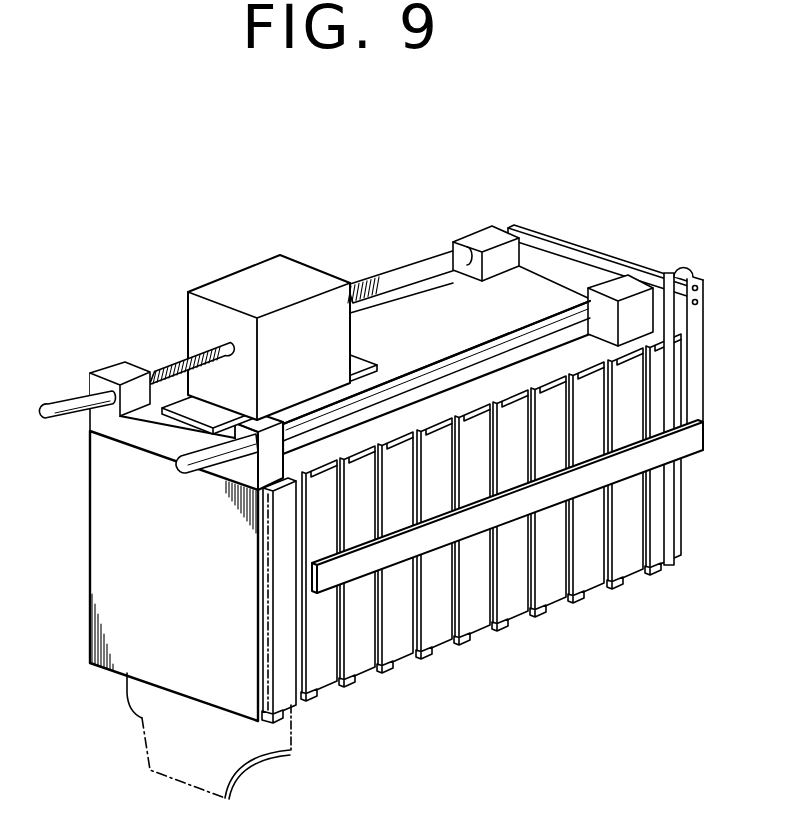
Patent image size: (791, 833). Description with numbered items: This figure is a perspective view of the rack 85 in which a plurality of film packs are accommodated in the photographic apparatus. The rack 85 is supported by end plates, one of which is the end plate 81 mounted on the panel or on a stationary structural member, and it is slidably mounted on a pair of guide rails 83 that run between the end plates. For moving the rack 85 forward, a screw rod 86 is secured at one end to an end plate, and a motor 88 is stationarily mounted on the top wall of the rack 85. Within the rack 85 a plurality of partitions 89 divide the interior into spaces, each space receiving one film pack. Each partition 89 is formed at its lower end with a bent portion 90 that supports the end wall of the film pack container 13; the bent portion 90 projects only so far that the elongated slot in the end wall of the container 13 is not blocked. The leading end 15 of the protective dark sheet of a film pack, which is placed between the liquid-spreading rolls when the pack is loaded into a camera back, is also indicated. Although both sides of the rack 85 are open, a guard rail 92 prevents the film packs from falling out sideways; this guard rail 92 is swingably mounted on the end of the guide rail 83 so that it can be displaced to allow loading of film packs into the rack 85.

The container 13 is at (283, 670).
The leading end 15 is at (150, 760).
The end plate 81 is at (675, 510).
The guide rails 83 is at (418, 373).
The rack 85 is at (527, 290).
The screw rod 86 is at (213, 347).
The motor 88 is at (258, 274).
The partitions 89 is at (443, 622).
The bent portion 90 is at (385, 672).
The guard rail 92 is at (590, 478).